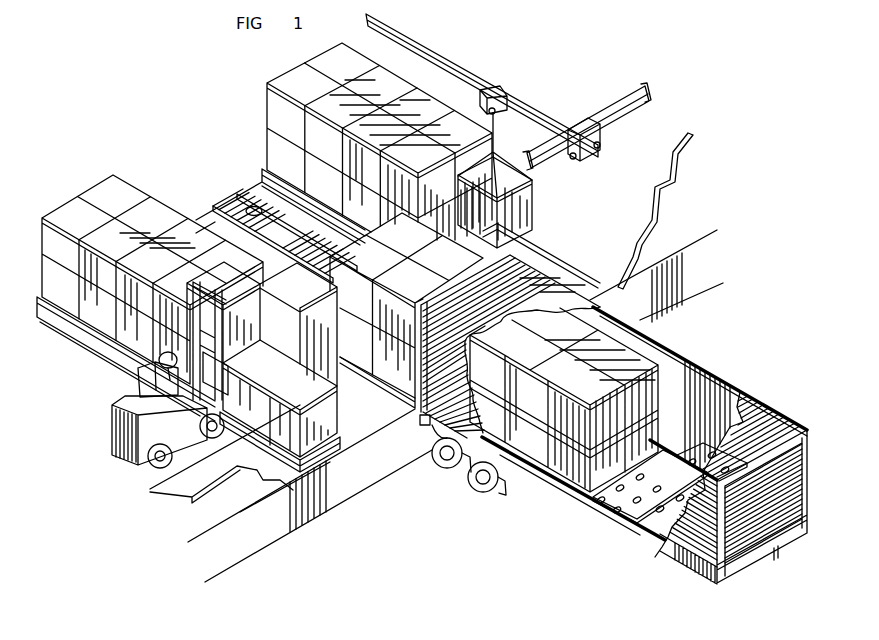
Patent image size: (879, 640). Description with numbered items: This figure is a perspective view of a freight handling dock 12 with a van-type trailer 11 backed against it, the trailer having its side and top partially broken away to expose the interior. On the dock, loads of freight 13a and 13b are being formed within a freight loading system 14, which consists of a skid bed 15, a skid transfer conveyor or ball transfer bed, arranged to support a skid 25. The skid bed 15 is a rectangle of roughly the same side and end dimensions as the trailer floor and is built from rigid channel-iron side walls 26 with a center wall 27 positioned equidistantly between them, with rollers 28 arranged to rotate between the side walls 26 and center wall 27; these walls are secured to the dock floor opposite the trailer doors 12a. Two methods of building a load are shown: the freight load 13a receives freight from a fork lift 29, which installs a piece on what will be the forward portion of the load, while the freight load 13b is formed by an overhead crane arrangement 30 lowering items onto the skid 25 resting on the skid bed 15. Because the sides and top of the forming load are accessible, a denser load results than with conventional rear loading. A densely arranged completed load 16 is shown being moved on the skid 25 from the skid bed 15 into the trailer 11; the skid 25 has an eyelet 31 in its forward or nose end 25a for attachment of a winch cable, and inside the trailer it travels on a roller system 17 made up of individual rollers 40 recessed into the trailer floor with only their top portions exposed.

The van-type trailer 11 is at (795, 412).
The freight handling dock 12 is at (390, 464).
The trailer doors 12a is at (435, 462).
The load of freight 13a is at (75, 188).
The load of freight 13b is at (286, 81).
The freight loading system 14 is at (265, 175).
The skid bed 15 is at (222, 217).
The load of freight 16 is at (640, 339).
The roller system 17 is at (630, 527).
The skid 25 is at (268, 432).
The nose end of skid 25a is at (590, 505).
The side walls 26 is at (295, 236).
The center wall 27 is at (215, 213).
The rollers 28 is at (262, 213).
The fork lift 29 is at (112, 407).
The overhead crane arrangement 30 is at (526, 90).
The eyelet 31 is at (700, 383).
The rollers 40 is at (658, 514).